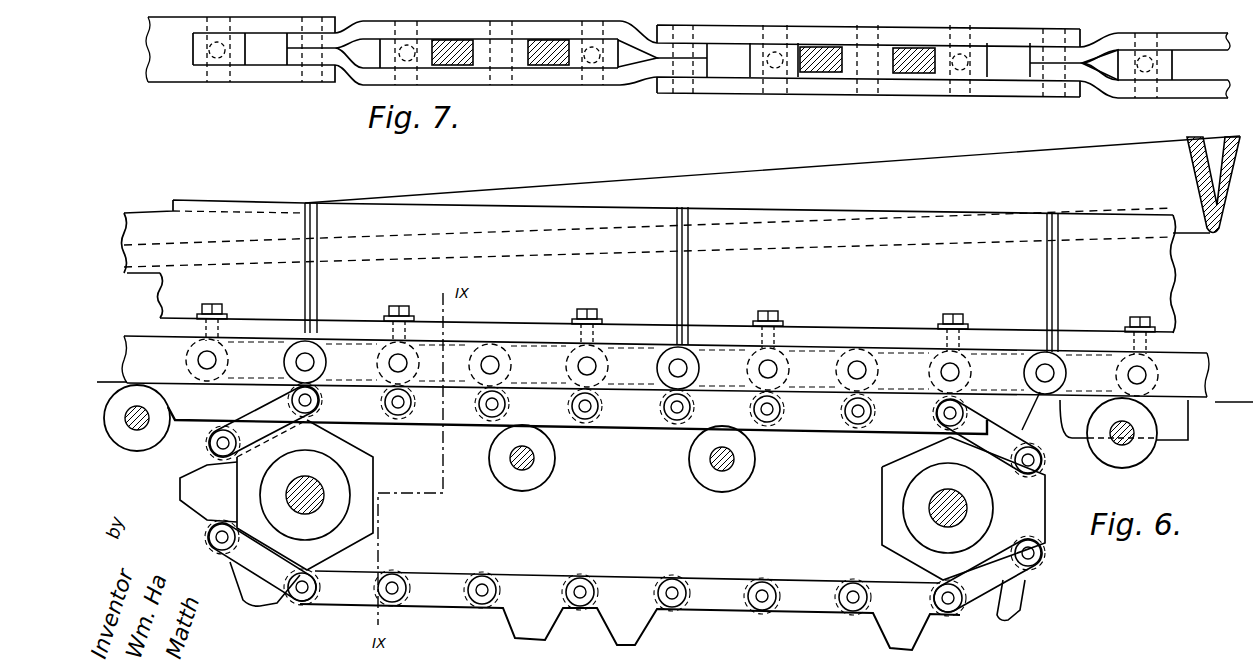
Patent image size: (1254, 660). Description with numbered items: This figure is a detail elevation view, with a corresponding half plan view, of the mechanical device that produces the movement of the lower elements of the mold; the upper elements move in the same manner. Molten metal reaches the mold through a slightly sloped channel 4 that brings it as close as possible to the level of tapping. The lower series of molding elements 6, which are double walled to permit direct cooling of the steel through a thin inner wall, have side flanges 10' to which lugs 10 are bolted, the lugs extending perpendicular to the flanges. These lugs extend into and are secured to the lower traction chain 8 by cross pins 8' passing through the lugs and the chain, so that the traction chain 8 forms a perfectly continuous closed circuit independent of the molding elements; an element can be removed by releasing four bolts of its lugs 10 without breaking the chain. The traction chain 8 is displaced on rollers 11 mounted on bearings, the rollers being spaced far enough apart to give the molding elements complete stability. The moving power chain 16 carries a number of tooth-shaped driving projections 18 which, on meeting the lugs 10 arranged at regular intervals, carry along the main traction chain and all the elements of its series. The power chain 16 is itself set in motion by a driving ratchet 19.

In FIG. 6, the channel 4 is at (922, 168).
In FIG. 6, the molding elements 6 is at (666, 276).
In FIG. 7, the lower traction chain 8 is at (869, 78).
In FIG. 6, the cross pins 8' is at (675, 338).
In FIG. 7, the lugs 10 is at (461, 68).
In FIG. 6, the lugs 10 is at (676, 319).
In FIG. 6, the side flanges 10' is at (401, 329).
In FIG. 6, the rollers 11 is at (740, 468).
In FIG. 6, the moving power chain 16 is at (537, 582).
In FIG. 7, the driving projections 18 is at (470, 53).
In FIG. 6, the driving projections 18 is at (190, 490).
In FIG. 6, the driving ratchet 19 is at (343, 445).